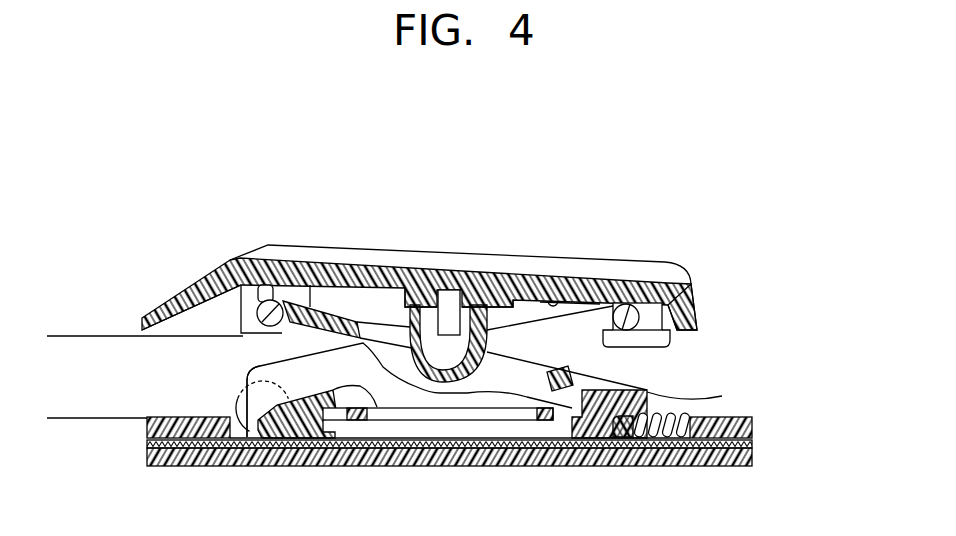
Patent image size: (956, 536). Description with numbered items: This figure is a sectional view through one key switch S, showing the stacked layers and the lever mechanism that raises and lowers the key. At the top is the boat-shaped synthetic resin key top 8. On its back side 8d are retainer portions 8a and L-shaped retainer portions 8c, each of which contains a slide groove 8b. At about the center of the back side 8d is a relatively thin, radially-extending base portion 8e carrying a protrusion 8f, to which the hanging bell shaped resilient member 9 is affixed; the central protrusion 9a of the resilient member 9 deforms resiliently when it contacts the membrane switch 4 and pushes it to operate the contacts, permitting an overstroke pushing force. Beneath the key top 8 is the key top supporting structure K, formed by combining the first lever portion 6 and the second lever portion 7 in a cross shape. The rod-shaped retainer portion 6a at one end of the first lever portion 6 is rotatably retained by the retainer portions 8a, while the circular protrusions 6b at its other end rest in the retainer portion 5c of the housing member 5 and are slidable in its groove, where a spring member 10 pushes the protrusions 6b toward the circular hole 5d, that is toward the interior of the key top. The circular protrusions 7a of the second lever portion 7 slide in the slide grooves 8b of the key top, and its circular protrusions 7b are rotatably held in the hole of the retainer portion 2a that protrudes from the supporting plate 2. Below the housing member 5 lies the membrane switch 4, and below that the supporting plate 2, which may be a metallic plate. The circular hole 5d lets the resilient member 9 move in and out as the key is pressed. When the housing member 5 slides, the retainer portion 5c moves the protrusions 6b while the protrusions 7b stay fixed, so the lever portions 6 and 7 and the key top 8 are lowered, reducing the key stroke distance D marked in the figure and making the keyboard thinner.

The supporting plate 2 is at (760, 457).
The retainer portion 2a is at (240, 420).
The membrane switch 4 is at (759, 442).
The housing member 5 is at (757, 425).
The retainer portion 5c is at (650, 393).
The circular hole 5d is at (423, 427).
The first lever portion 6 is at (524, 383).
The rod-shaped retainer portion 6a is at (220, 290).
The circular protrusions 6b is at (615, 430).
The second lever portion 7 is at (380, 400).
The circular protrusions 7a is at (676, 292).
The circular protrusions 7b is at (253, 437).
The key top 8 is at (651, 251).
The retainer portions 8a is at (256, 297).
The slide groove 8b is at (650, 315).
The L-shaped retainer portions 8c is at (660, 340).
The back side 8d is at (571, 287).
The base portion 8e is at (403, 292).
The protrusion 8f is at (548, 299).
The resilient member 9 is at (445, 290).
The protrusion 9a is at (458, 384).
The spring member 10 is at (665, 420).
The key switch S is at (167, 283).
The key top supporting structure K is at (686, 373).
The key stroke distance D is at (60, 340).